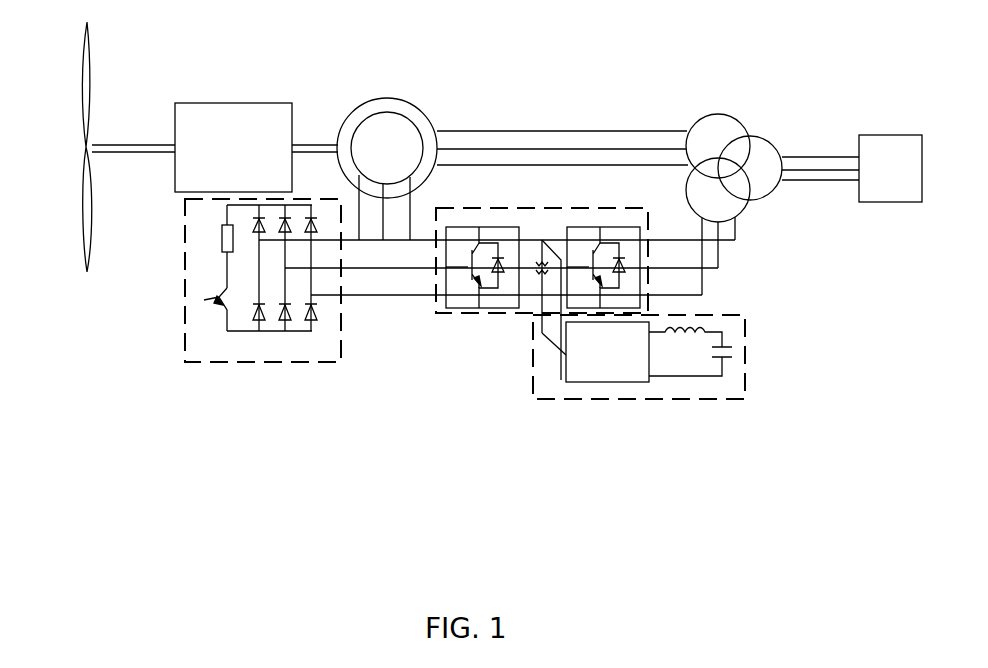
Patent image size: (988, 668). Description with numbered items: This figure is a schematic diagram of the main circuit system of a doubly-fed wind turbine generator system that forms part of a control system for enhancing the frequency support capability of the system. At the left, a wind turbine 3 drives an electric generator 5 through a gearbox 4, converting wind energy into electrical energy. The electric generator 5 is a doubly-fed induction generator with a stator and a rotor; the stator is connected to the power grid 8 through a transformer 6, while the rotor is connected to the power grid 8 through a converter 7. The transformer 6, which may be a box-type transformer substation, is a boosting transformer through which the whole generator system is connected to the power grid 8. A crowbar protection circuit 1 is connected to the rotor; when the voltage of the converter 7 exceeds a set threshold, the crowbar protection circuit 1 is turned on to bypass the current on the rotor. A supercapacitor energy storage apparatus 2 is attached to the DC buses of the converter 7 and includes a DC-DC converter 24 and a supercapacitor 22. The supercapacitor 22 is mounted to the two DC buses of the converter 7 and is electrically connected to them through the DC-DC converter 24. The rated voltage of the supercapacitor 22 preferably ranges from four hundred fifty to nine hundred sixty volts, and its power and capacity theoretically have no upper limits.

The crowbar protection circuit 1 is at (208, 363).
The supercapacitor energy storage apparatus 2 is at (662, 392).
The wind turbine 3 is at (80, 233).
The gearbox 4 is at (227, 103).
The electric generator 5 is at (430, 120).
The transformer 6 is at (737, 125).
The converter 7 is at (437, 310).
The power grid 8 is at (887, 197).
The supercapacitor 22 is at (724, 350).
The DC-DC converter 24 is at (628, 383).